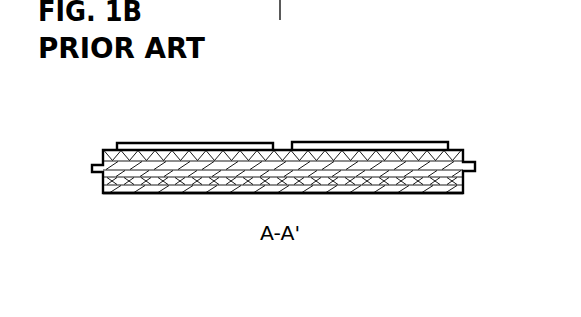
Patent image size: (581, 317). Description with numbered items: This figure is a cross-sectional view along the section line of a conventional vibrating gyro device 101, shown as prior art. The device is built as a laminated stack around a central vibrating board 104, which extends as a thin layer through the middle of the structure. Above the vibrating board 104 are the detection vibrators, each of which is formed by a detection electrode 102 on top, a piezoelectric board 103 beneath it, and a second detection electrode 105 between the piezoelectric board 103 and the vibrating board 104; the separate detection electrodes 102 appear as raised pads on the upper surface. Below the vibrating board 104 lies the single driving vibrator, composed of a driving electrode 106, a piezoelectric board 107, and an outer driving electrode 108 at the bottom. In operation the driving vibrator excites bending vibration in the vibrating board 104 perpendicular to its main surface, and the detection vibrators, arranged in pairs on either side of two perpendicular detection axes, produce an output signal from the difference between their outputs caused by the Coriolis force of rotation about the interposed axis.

The vibrating gyro device 101 is at (378, 89).
The detection electrode 102 is at (205, 142).
The piezoelectric board 103 is at (454, 152).
The vibrating board 104 is at (476, 166).
The detection electrode 105 is at (465, 160).
The driving electrode 106 is at (463, 173).
The piezoelectric board 107 is at (456, 184).
The driving electrode 108 is at (392, 193).